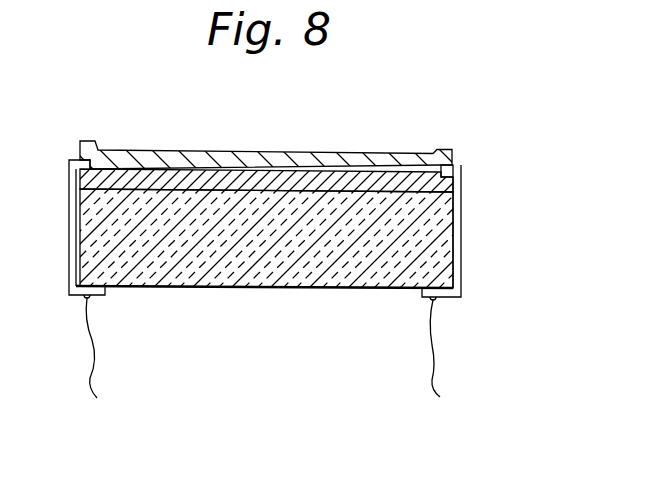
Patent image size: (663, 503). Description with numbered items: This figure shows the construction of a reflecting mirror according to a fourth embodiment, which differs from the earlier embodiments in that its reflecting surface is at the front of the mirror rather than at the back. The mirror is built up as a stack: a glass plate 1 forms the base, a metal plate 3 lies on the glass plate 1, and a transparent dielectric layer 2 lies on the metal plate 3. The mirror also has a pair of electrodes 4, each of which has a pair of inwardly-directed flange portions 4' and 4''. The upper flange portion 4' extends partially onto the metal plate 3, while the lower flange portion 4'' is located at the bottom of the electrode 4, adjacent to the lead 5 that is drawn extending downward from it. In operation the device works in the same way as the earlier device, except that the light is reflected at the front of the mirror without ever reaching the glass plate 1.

The glass plate 1 is at (317, 288).
The transparent dielectric layer 2 is at (452, 150).
The metal plate 3 is at (453, 188).
The electrode 4 is at (287, 228).
The upper flange portion 4' is at (482, 157).
The lower flange portion 4'' is at (260, 317).
The lead wire 5 is at (436, 366).